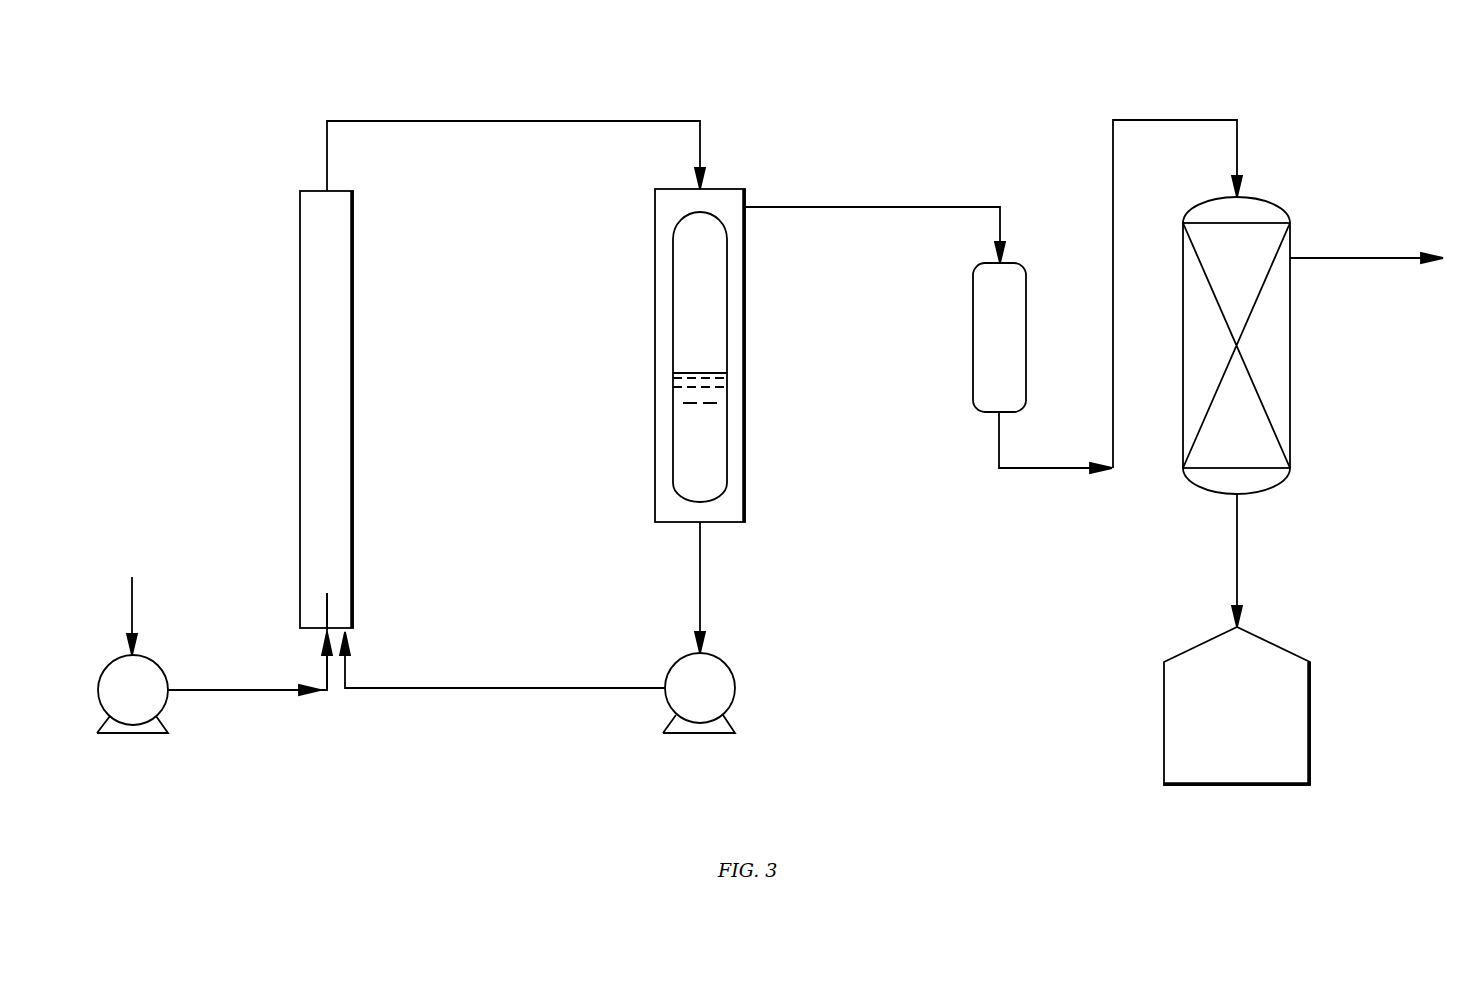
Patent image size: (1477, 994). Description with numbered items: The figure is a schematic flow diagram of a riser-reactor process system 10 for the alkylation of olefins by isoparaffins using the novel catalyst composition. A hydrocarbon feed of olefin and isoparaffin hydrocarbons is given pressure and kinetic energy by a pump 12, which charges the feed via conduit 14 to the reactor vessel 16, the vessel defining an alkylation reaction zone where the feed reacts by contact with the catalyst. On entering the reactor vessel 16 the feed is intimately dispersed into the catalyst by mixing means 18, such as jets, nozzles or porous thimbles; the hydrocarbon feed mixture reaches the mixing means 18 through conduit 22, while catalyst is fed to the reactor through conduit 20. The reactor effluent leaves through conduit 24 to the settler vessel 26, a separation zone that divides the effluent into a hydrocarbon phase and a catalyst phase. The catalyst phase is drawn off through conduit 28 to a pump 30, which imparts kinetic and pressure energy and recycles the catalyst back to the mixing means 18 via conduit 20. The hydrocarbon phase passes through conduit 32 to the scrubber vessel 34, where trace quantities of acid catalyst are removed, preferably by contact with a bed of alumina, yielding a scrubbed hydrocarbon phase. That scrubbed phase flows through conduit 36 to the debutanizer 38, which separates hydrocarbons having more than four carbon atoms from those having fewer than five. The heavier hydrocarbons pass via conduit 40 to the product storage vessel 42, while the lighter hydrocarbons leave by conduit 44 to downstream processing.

The riser-reactor process system 10 is at (805, 78).
The pump 12 is at (162, 660).
The conduit 14 is at (254, 690).
The reactor vessel 16 is at (353, 375).
The mixing means 18 is at (327, 611).
The conduit 20 is at (460, 690).
The conduit 22 is at (327, 675).
The conduit 24 is at (512, 121).
The settler vessel 26 is at (745, 425).
The conduit 28 is at (700, 583).
The pump 30 is at (735, 688).
The conduit 32 is at (980, 207).
The scrubber vessel 34 is at (1026, 360).
The conduit 36 is at (1175, 120).
The debutanizer 38 is at (1290, 365).
The conduit 40 is at (1237, 548).
The product storage vessel 42 is at (1310, 670).
The conduit 44 is at (1350, 258).